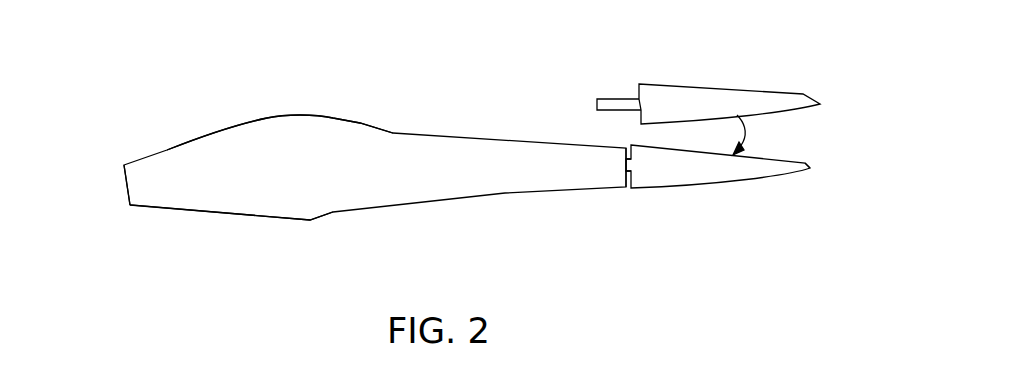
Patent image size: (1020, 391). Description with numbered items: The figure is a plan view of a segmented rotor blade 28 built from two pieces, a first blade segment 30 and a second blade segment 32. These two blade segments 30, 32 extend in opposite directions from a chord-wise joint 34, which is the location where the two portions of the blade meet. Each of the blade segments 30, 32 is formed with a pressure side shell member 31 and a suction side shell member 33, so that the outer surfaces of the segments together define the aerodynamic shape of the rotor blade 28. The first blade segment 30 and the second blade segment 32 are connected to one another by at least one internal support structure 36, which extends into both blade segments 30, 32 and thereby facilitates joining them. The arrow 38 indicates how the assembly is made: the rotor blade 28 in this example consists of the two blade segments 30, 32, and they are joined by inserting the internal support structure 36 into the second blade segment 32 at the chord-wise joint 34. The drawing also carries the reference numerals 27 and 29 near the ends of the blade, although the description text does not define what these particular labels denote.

The blade tip 27 is at (808, 162).
The rotor blade 28 is at (158, 43).
The front end of body 29 is at (147, 157).
The first blade segment 30 is at (702, 86).
The pressure side shell member 31 is at (448, 130).
The second blade segment 32 is at (193, 212).
The suction side shell member 33 is at (362, 142).
The chord-wise joint 34 is at (628, 187).
The internal support structure 36 is at (620, 99).
The arrow 38 is at (745, 133).